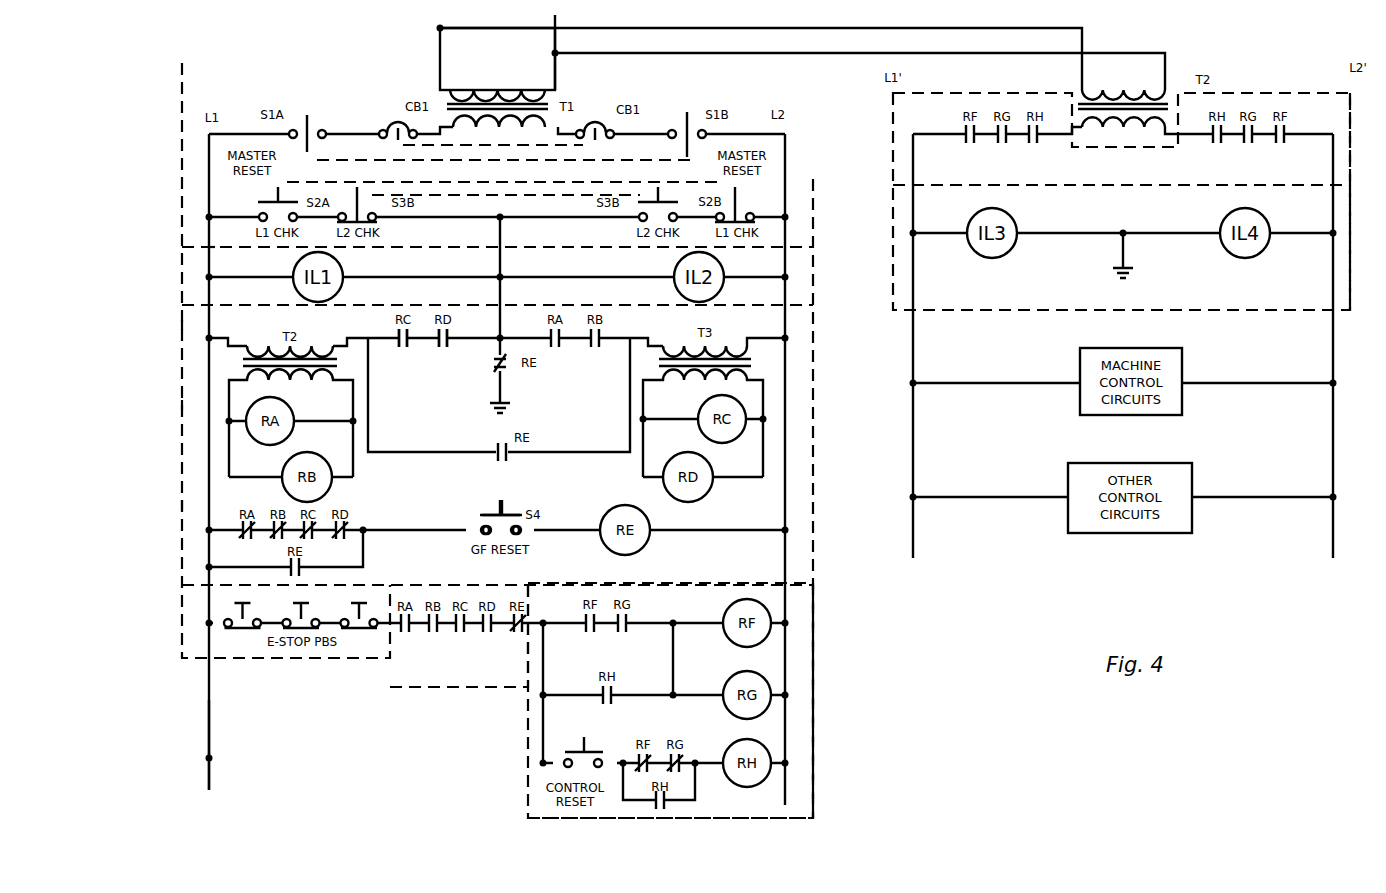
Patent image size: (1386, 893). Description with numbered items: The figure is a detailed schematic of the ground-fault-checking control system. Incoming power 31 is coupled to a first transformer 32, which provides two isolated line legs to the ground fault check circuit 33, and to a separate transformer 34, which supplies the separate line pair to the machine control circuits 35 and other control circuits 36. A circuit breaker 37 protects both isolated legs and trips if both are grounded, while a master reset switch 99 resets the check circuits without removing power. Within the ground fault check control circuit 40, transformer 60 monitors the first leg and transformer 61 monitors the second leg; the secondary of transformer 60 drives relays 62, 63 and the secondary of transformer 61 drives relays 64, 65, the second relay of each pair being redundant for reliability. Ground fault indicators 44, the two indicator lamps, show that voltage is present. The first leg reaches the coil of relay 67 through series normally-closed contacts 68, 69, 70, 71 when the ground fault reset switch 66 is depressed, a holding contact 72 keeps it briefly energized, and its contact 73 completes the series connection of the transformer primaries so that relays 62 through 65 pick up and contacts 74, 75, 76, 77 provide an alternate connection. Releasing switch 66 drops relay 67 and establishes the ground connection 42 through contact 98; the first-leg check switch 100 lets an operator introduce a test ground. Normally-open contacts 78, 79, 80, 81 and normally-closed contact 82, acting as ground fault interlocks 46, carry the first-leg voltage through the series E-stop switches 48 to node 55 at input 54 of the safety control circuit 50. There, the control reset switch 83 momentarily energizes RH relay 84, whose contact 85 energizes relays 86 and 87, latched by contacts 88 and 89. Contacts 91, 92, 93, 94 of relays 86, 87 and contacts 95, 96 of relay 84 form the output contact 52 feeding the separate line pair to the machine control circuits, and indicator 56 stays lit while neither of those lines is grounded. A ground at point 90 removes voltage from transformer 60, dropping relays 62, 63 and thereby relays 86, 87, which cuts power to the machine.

The power source 31 is at (558, 60).
The first transformer 32 is at (450, 107).
The ground fault check circuit 33 is at (182, 348).
The separate transformer 34 is at (1157, 73).
The machine control circuits 35 is at (1175, 405).
The other control circuits 36 is at (1185, 518).
The circuit breaker 37 is at (385, 122).
The ground fault check control circuit 40 is at (222, 440).
The ground connection 42 is at (492, 411).
The ground fault indicators 44 is at (212, 258).
The ground fault interlocks 46 is at (460, 688).
The E-stop switches 48 is at (295, 650).
The safety control circuit 50 is at (812, 598).
The output contact 52 is at (1340, 143).
The input 54 is at (222, 553).
The node 55 is at (548, 600).
The ground fault indicator 56 is at (1336, 205).
The transformer 60 is at (280, 344).
The transformer 61 is at (730, 341).
The relay 62 is at (290, 408).
The relay 63 is at (292, 467).
The relay 64 is at (713, 405).
The relay 65 is at (703, 485).
The ground fault reset switch 66 is at (486, 512).
The relay 67 is at (632, 548).
The normally-closed contact 68 is at (248, 542).
The normally-closed contact 69 is at (280, 508).
The normally-closed contact 70 is at (309, 542).
The normally-closed contact 71 is at (343, 510).
The holding contact 72 is at (298, 576).
The normally-open contact 73 is at (506, 462).
The normally-open contact 74 is at (404, 350).
The normally-open contact 75 is at (444, 350).
The normally-open contact 76 is at (556, 350).
The normally-open contact 77 is at (596, 350).
The normally-open contact 78 is at (405, 634).
The normally-open contact 79 is at (433, 634).
The normally-open contact 80 is at (460, 634).
The normally-open contact 81 is at (487, 634).
The normally-closed contact 82 is at (518, 634).
The control reset switch 83 is at (595, 745).
The RH relay 84 is at (740, 780).
The normally-open contact 85 is at (600, 703).
The relay 86 is at (735, 630).
The relay 87 is at (735, 708).
The normally-open contact 88 is at (590, 634).
The normally-open contact 89 is at (622, 634).
The point 90 is at (212, 758).
The normally-open contact 91 is at (970, 144).
The normally-open contact 92 is at (1280, 144).
The normally-open contact 93 is at (1002, 144).
The normally-open contact 94 is at (1248, 144).
The normally-closed contact 95 is at (1033, 144).
The normally-closed contact 96 is at (1217, 144).
The normally-closed contact 98 is at (505, 371).
The master reset switch 99 is at (303, 115).
The L1 CHK switch 100 is at (258, 206).